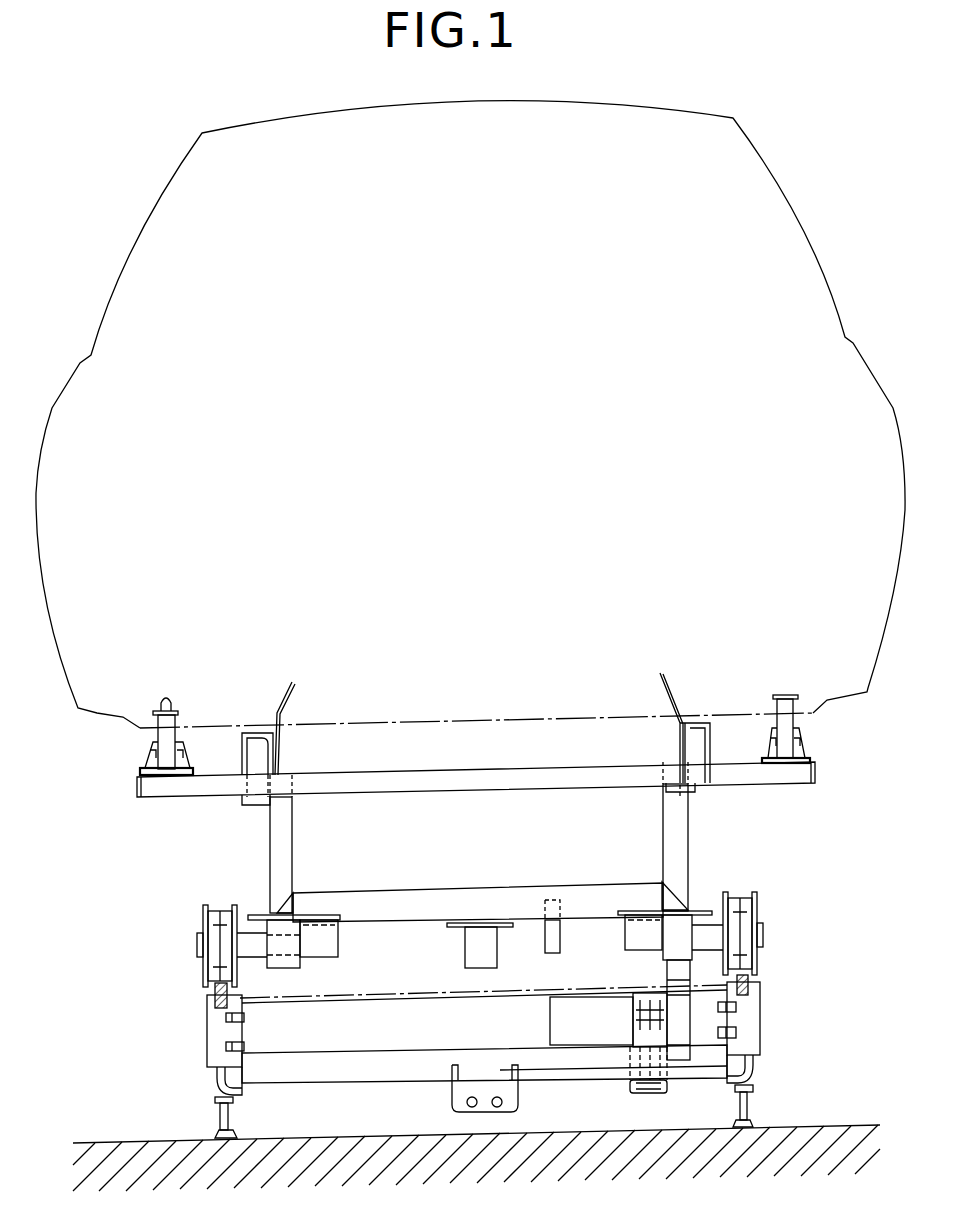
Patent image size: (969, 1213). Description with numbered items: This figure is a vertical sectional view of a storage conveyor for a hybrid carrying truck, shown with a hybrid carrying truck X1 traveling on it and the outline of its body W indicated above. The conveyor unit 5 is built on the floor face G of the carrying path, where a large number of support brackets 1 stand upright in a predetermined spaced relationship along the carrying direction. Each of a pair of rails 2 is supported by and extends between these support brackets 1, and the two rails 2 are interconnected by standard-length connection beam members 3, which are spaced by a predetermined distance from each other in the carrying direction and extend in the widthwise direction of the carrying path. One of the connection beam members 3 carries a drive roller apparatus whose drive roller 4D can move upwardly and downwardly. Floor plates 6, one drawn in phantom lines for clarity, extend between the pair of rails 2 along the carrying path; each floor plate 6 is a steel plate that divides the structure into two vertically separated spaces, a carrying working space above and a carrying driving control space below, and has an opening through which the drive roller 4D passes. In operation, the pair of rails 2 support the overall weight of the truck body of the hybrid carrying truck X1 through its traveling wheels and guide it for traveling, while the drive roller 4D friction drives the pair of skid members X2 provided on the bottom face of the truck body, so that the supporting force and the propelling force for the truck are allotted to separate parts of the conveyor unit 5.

The vehicle body W is at (597, 103).
The hybrid carrying truck X1 is at (700, 842).
The skid member X2 is at (283, 958).
The drive roller 4D is at (693, 977).
The support bracket 1 is at (213, 1045).
The rail 2 is at (213, 1007).
The standard-length connection beam member 3 is at (330, 1060).
The conveyor unit 5 is at (774, 1080).
The floor plate 6 is at (463, 988).
The floor face G is at (150, 1167).